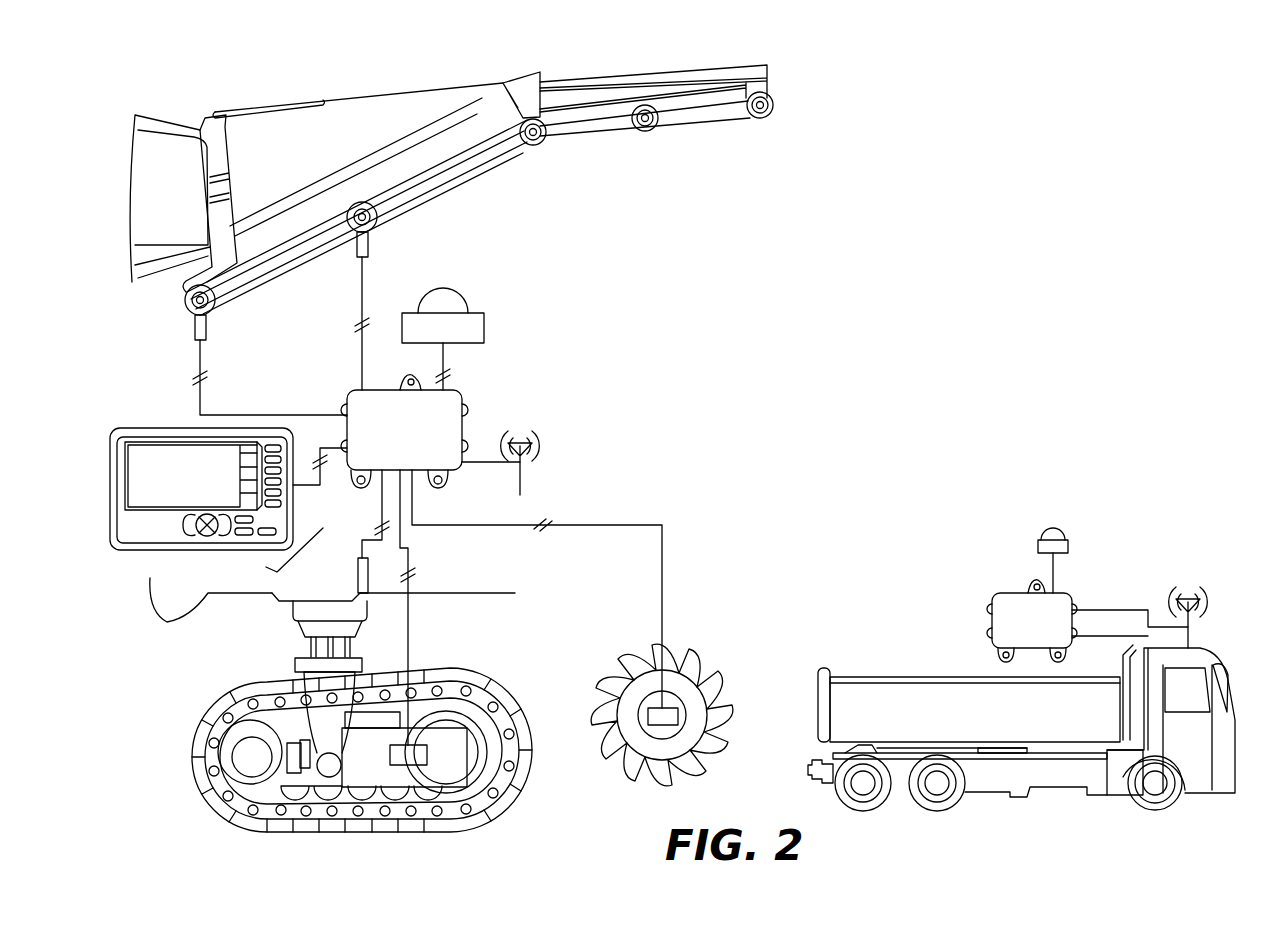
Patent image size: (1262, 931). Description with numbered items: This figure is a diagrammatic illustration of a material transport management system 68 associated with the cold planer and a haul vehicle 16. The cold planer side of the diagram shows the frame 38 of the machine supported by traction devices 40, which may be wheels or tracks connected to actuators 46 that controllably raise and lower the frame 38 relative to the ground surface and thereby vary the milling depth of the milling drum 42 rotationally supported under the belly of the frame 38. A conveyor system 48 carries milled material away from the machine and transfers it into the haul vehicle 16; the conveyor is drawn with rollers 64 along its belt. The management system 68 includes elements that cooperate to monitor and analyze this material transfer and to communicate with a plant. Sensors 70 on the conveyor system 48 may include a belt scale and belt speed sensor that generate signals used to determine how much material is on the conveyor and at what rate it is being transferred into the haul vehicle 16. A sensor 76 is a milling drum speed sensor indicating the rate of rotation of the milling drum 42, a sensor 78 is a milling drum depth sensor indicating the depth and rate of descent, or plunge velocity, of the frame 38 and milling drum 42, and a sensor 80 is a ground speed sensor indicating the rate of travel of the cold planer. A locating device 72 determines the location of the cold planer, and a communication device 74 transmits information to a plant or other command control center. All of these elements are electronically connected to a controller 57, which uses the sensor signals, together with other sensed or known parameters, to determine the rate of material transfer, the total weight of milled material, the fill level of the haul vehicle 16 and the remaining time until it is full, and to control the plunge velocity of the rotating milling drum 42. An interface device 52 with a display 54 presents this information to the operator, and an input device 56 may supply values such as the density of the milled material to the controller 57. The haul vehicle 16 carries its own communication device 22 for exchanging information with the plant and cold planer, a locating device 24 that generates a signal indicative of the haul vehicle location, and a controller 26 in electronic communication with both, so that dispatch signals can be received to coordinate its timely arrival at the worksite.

The haul vehicle 16 is at (866, 626).
The communication device 22 is at (1195, 636).
The locating device 24 is at (1070, 546).
The controller 26 is at (1087, 621).
The frame 38 is at (163, 145).
The traction devices 40 is at (205, 714).
The milling drum 42 is at (718, 700).
The actuators 46 is at (319, 685).
The conveyor system 48 is at (402, 68).
The interface device 52 is at (135, 552).
The display 54 is at (193, 476).
The input device 56 is at (310, 548).
The controller 57 is at (477, 560).
The conveyor roller 64 is at (194, 303).
The material transport management system 68 is at (704, 259).
The sensors 70 is at (194, 328).
The locating device 72 is at (443, 339).
The communication device 74 is at (525, 478).
The sensor 76 is at (648, 716).
The sensor 78 is at (368, 575).
The sensor 80 is at (420, 766).